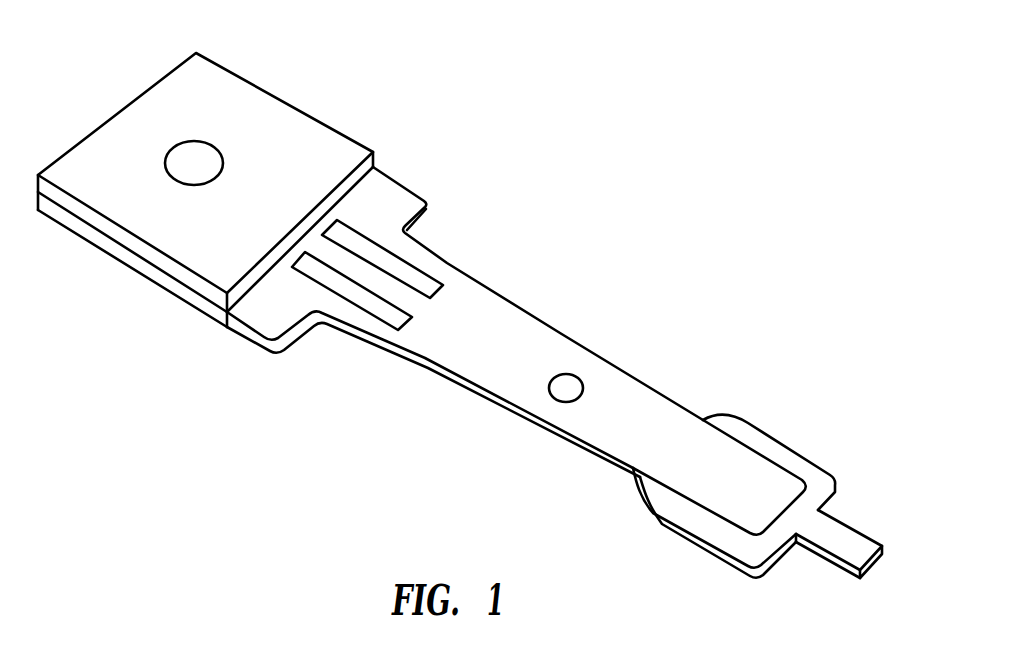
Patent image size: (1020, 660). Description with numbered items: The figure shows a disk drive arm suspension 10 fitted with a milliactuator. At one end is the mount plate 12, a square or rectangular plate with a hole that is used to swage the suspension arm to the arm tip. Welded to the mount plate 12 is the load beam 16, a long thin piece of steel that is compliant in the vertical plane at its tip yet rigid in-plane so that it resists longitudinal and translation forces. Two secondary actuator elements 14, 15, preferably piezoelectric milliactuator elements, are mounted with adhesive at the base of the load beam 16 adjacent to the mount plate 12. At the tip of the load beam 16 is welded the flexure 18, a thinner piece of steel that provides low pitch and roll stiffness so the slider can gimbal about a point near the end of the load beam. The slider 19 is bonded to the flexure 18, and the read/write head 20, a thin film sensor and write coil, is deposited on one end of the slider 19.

The disk drive arm suspension 10 is at (541, 97).
The mount plate 12 is at (265, 110).
The secondary actuator element 14 is at (428, 273).
The secondary actuator element 15 is at (382, 322).
The load beam 16 is at (537, 338).
The flexure 18 is at (767, 442).
The slider 19 is at (852, 525).
The read/write head 20 is at (882, 542).